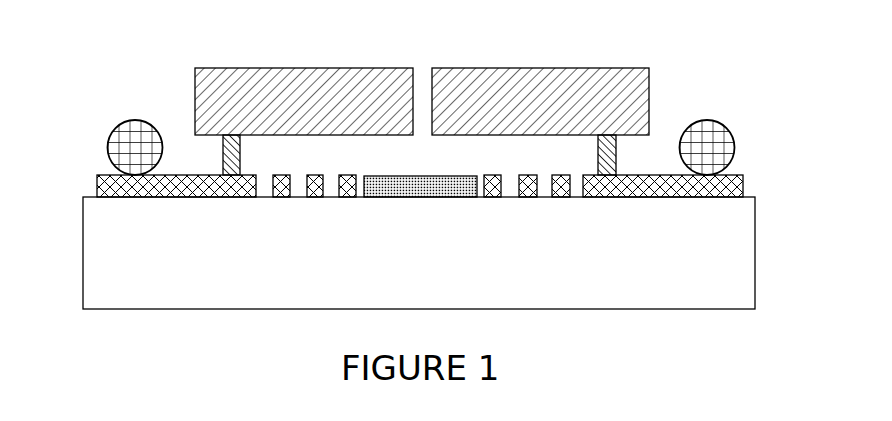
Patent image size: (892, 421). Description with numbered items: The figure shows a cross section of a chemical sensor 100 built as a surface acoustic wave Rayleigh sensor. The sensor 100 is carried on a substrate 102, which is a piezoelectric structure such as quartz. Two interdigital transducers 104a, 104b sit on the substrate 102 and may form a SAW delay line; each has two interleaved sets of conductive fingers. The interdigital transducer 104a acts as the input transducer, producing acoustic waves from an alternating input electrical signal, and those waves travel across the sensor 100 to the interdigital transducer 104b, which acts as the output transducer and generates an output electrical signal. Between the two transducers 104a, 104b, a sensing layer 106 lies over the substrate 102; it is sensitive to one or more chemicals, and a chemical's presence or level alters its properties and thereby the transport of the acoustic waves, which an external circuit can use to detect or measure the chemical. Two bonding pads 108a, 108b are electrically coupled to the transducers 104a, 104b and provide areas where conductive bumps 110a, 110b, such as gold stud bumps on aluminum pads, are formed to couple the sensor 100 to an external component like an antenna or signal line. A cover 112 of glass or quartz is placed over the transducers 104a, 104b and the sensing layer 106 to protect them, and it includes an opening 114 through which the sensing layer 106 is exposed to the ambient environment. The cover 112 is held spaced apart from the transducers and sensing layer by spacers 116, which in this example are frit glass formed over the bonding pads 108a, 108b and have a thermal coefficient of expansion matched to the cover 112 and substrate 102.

The chemical sensor 100 is at (614, 327).
The substrate 102 is at (751, 307).
The interdigital transducer 104a is at (305, 203).
The interdigital transducer 104b is at (530, 205).
The sensing layer 106 is at (405, 203).
The bonding pad 108a is at (157, 202).
The bonding pad 108b is at (618, 203).
The conductive bump 110a is at (131, 118).
The conductive bump 110b is at (705, 118).
The cover 112 is at (532, 66).
The opening 114 is at (424, 87).
The spacers 116 is at (243, 155).